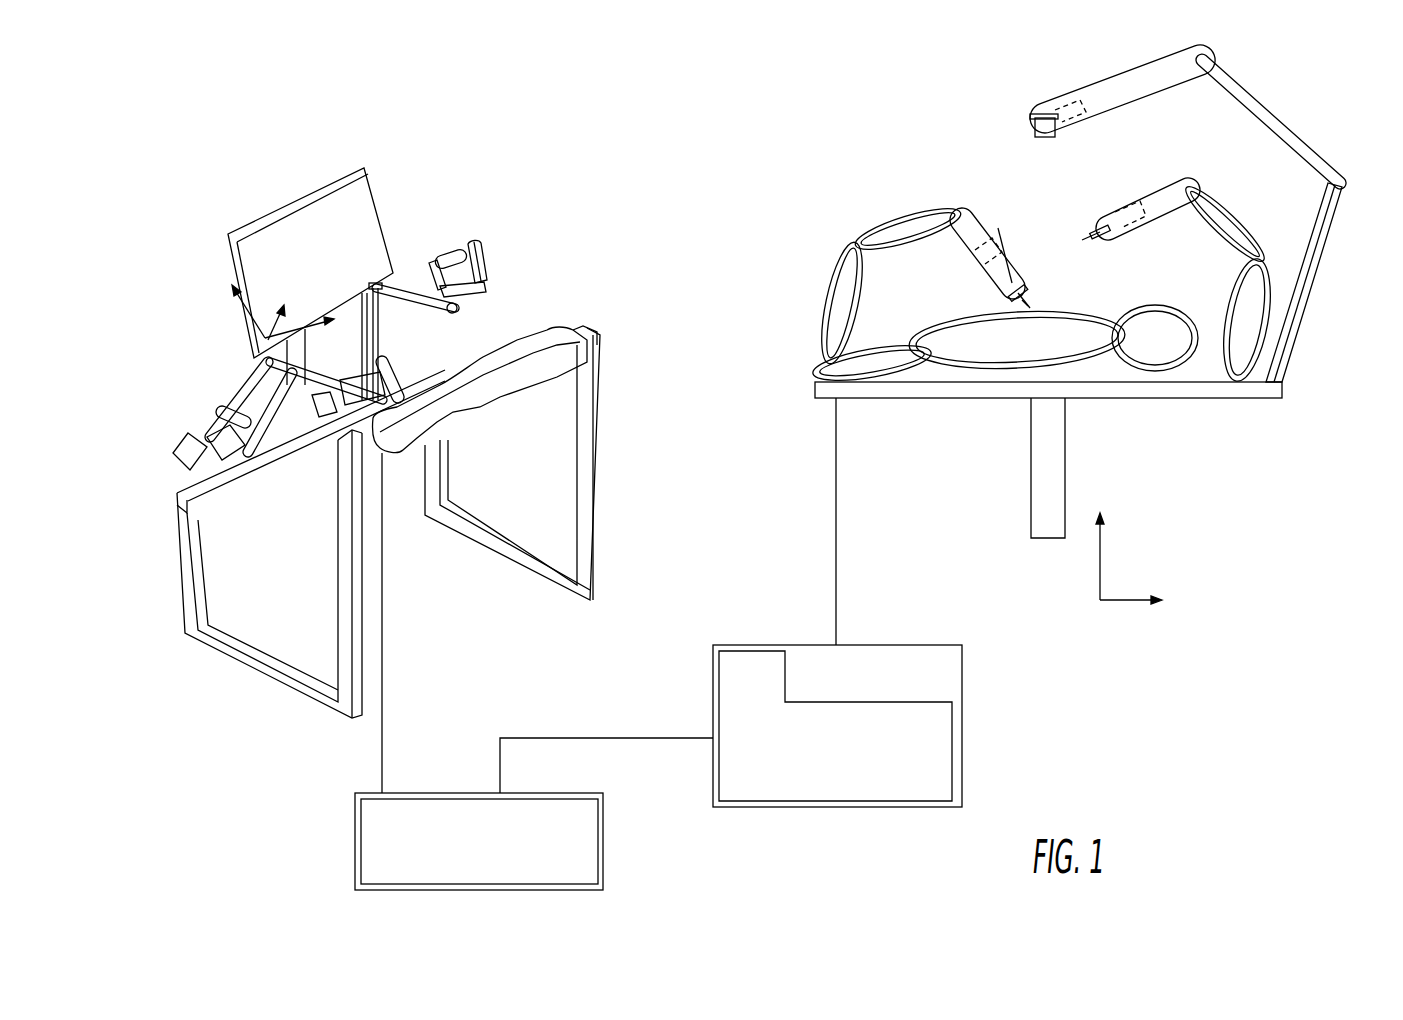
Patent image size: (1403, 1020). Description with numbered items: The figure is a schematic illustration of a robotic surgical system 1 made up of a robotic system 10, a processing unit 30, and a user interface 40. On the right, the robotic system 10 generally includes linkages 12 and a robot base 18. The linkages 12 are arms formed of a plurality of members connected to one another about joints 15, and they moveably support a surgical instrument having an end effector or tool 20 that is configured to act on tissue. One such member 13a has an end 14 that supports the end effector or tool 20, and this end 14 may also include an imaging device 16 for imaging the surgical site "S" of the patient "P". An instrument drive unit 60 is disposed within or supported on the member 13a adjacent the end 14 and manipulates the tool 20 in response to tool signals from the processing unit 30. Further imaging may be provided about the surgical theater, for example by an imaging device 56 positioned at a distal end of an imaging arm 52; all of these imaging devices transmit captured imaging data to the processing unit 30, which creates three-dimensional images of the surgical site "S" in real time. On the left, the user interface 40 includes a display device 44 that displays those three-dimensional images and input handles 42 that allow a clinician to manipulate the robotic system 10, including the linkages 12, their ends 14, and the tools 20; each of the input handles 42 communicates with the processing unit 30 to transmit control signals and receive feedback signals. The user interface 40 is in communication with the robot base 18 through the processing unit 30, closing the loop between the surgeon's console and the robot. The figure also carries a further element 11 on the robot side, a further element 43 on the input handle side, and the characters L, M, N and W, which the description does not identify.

The robotic surgical system 1 is at (574, 118).
The robotic system 10 is at (913, 95).
The control device 11 is at (932, 655).
The linkages 12 is at (864, 190).
The member 13a is at (1192, 205).
The end 14 is at (990, 290).
The joints 15 is at (1242, 227).
The imaging device 16 is at (1005, 265).
The robot base 18 is at (818, 751).
The end effector or tool 20 is at (1040, 318).
The processing unit 30 is at (463, 851).
The user interface 40 is at (238, 155).
The input handles 42 is at (410, 368).
The gimbals 43 is at (430, 263).
The display device 44 is at (378, 190).
The imaging arm 52 is at (1297, 112).
The imaging device 56 is at (1030, 130).
The instrument drive unit 60 is at (1058, 100).
The axis L is at (1030, 135).
The axis M is at (1043, 147).
The axis N is at (1043, 164).
The patient P is at (1063, 347).
The surgical site S is at (1070, 315).
The workspace W is at (487, 192).